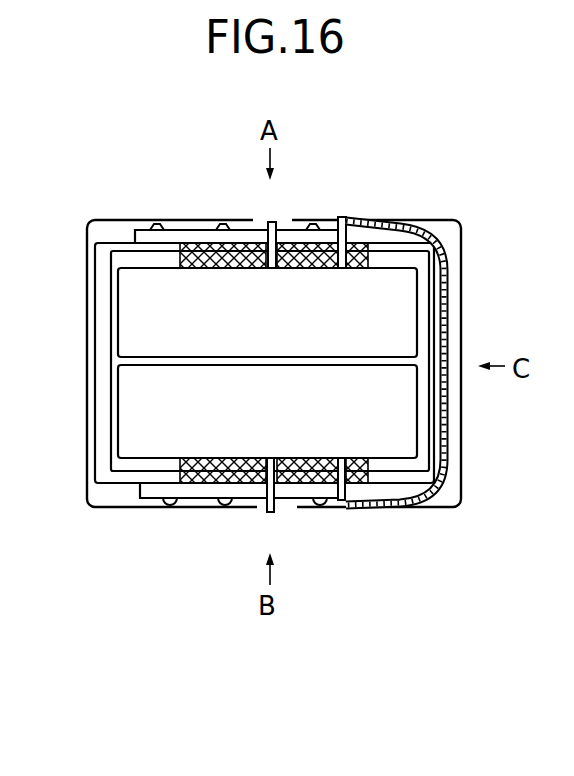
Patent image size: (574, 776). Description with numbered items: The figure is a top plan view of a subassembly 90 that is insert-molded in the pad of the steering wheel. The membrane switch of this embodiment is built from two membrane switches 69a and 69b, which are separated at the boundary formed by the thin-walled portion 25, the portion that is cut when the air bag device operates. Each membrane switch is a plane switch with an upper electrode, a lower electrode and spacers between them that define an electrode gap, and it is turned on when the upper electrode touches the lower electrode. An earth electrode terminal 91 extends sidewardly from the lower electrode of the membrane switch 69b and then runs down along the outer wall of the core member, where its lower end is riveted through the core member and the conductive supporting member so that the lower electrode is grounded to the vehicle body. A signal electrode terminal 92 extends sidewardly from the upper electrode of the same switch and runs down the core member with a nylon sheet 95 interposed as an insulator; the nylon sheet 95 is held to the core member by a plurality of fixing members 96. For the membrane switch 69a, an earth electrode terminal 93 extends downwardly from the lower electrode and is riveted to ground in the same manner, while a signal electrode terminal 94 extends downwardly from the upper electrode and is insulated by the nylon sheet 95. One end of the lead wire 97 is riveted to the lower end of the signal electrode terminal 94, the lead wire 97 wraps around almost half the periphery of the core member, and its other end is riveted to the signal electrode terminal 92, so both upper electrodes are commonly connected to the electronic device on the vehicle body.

The subassembly 90 is at (481, 211).
The lead wire 97 is at (448, 305).
The earth electrode terminal 91 is at (272, 222).
The signal electrode terminal 92 is at (342, 217).
The earth electrode terminal 93 is at (264, 513).
The signal electrode terminal 94 is at (340, 503).
The nylon sheet 95 is at (182, 229).
The fixing members 96 is at (228, 229).
The membrane switch 69a is at (128, 426).
The membrane switch 69b is at (128, 292).
The thin-walled portion 25 is at (118, 366).